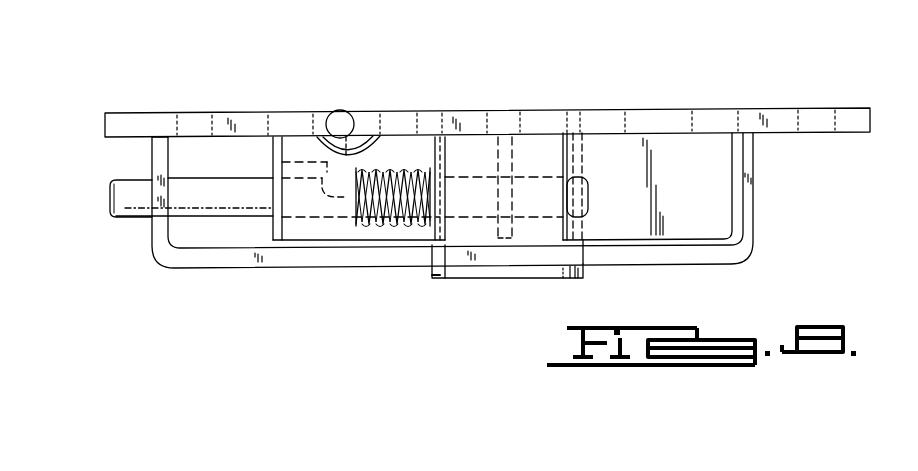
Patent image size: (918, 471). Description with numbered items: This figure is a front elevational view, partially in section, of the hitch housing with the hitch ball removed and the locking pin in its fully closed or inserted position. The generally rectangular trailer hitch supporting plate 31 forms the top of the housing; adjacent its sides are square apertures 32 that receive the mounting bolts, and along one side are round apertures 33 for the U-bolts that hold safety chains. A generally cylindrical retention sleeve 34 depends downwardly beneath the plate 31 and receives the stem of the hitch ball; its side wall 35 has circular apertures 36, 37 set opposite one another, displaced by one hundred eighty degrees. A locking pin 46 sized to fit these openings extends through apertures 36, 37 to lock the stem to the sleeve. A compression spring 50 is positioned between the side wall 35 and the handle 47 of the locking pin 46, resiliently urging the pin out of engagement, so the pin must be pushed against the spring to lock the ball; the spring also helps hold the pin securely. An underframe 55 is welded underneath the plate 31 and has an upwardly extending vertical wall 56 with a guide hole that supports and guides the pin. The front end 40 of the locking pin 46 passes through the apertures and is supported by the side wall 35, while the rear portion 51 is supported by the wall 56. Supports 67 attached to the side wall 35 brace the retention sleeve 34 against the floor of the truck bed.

The trailer hitch supporting plate 31 is at (847, 108).
The square apertures 32 is at (192, 113).
The round apertures 33 is at (282, 112).
The retention sleeve 34 is at (437, 280).
The side wall 35 is at (447, 150).
The aperture 36 is at (438, 181).
The aperture 37 is at (585, 186).
The front end of locking pin 40 is at (543, 213).
The locking pin 46 is at (133, 178).
The handle 47 is at (272, 163).
The compression spring 50 is at (375, 228).
The rear portion of locking pin 51 is at (128, 208).
The underframe 55 is at (205, 262).
The vertical wall 56 is at (158, 146).
The supports 67 is at (512, 154).